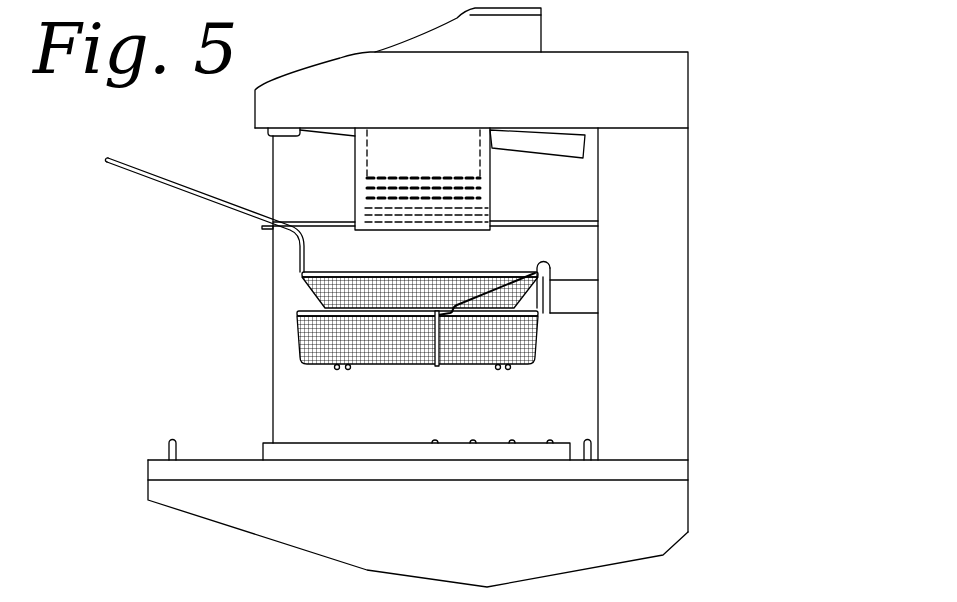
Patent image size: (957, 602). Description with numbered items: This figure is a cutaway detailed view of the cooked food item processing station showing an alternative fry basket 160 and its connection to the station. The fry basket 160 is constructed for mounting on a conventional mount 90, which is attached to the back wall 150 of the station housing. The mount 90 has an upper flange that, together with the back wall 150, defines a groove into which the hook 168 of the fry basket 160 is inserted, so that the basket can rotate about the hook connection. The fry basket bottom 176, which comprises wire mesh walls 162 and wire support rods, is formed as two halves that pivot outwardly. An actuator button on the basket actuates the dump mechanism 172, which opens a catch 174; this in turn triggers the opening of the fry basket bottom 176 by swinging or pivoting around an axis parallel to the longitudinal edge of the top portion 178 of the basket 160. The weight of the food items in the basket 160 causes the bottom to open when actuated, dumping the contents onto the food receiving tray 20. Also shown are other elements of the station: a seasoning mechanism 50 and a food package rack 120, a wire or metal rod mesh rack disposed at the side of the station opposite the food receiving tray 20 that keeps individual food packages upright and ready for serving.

The food receiving tray 20 is at (323, 448).
The seasoning mechanism 50 is at (357, 170).
The mount 90 is at (573, 282).
The food package rack 120 is at (170, 442).
The back wall 150 is at (600, 362).
The fry basket 160 is at (248, 243).
The wire mesh walls 162 is at (398, 356).
The hook 168 is at (541, 263).
The dump mechanism 172 is at (552, 282).
The catch 174 is at (432, 312).
The fry basket bottom 176 is at (298, 338).
The top portion 178 is at (352, 268).